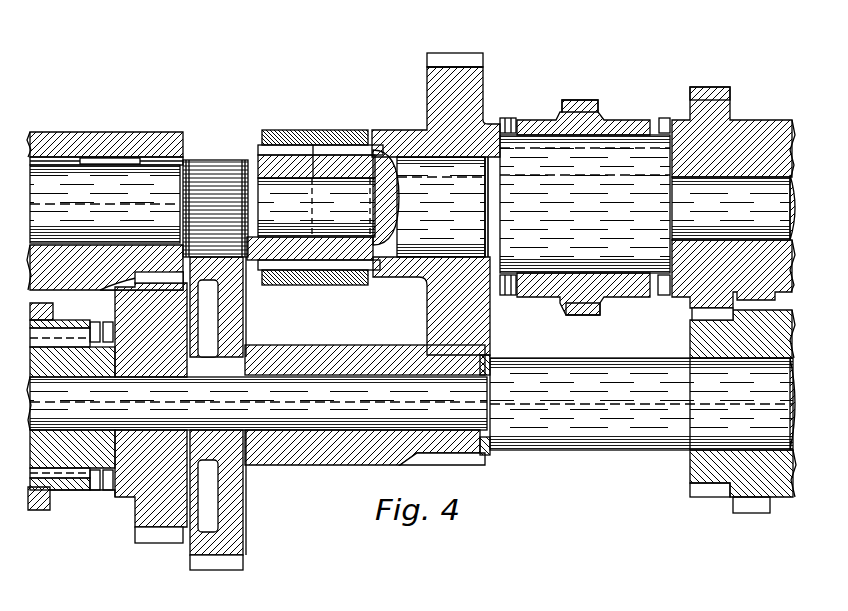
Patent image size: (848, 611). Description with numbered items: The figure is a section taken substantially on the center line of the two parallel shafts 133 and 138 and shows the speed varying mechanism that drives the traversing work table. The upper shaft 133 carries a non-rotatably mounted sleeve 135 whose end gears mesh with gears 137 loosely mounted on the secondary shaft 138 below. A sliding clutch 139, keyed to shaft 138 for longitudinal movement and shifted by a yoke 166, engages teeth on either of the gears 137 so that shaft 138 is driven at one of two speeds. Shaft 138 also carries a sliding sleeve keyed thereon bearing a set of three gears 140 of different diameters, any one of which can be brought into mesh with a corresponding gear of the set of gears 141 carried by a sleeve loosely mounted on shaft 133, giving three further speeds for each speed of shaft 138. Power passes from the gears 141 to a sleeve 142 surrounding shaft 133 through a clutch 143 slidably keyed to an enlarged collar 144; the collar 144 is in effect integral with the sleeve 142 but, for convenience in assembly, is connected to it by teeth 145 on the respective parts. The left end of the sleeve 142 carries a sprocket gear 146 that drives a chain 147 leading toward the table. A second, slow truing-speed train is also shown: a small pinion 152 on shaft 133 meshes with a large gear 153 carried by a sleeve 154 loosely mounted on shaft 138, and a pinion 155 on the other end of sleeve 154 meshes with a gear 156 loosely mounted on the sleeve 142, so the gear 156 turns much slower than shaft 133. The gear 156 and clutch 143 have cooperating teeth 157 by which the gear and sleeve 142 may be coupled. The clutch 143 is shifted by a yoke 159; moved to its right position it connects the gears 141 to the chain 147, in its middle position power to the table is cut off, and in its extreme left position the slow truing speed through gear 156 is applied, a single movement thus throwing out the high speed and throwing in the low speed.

The shaft 133 is at (110, 190).
The sleeve 135 is at (66, 152).
The gears 137 is at (157, 532).
The secondary shaft 138 is at (605, 450).
The sliding clutch 139 is at (60, 495).
The gears 140 is at (752, 506).
The gears 141 is at (710, 93).
The sleeve 142 is at (424, 162).
The clutch 143 is at (624, 127).
The enlarged collar 144 is at (551, 158).
The teeth 145 is at (489, 195).
The sprocket gear 146 is at (293, 150).
The chain 147 is at (318, 140).
The pinion 152 is at (219, 168).
The large gear 153 is at (233, 570).
The sleeve 154 is at (300, 453).
The pinion 155 is at (462, 460).
The gear 156 is at (456, 60).
The cooperating teeth 157 is at (518, 108).
The yoke 159 is at (585, 100).
The yoke 166 is at (37, 512).